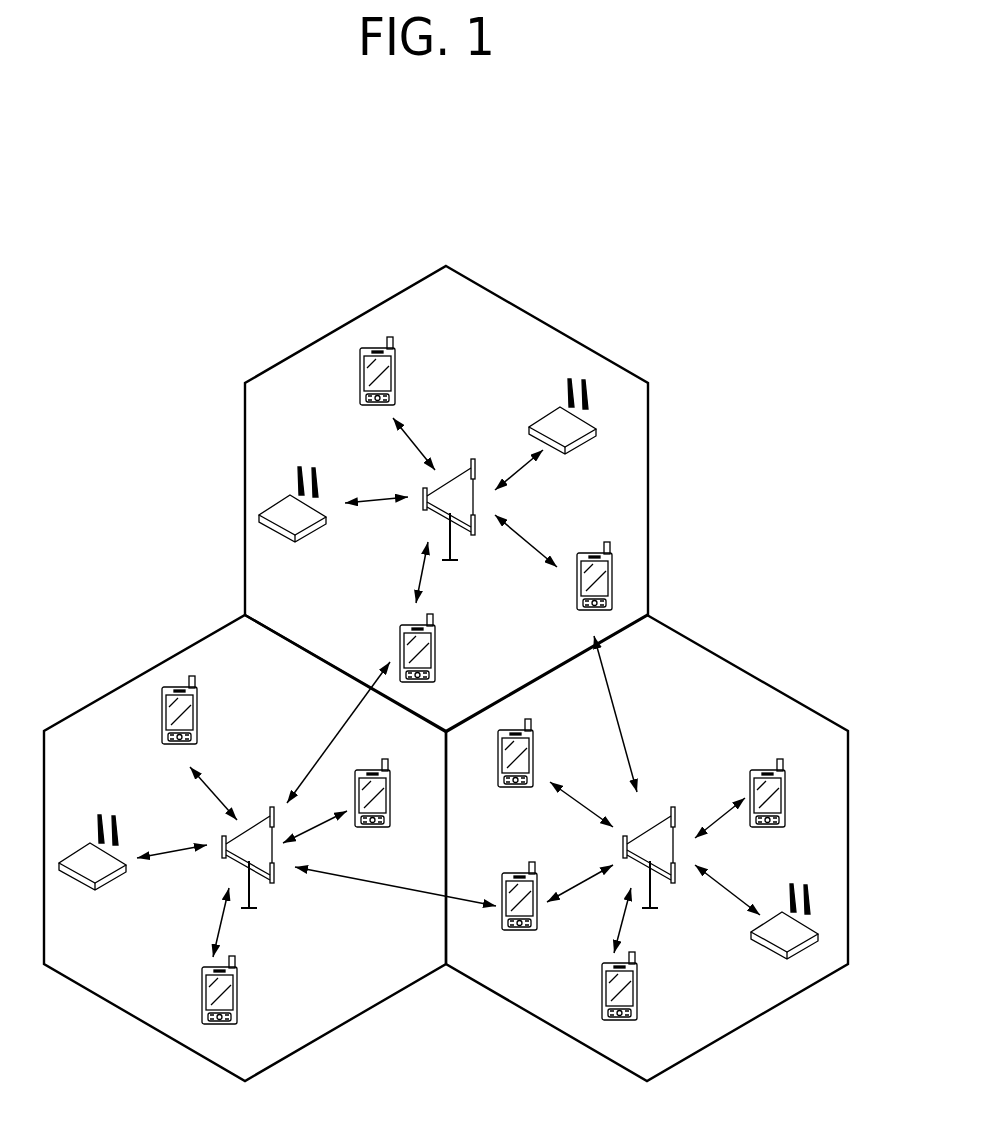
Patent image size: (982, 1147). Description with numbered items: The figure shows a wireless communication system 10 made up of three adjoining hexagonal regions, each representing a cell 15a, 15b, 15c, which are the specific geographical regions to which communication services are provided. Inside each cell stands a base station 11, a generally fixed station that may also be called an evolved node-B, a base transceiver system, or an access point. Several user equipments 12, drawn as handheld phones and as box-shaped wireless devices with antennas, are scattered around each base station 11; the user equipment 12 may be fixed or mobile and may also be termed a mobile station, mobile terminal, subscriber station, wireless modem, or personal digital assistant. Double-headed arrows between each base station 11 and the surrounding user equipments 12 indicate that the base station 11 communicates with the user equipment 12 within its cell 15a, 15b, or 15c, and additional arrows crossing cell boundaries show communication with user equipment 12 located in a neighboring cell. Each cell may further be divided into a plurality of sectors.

The wireless communication system 10 is at (738, 383).
The base station 11 is at (462, 472).
The user equipment 12 is at (397, 373).
The cell 15a is at (648, 488).
The cell 15b is at (775, 689).
The cell 15c is at (120, 687).